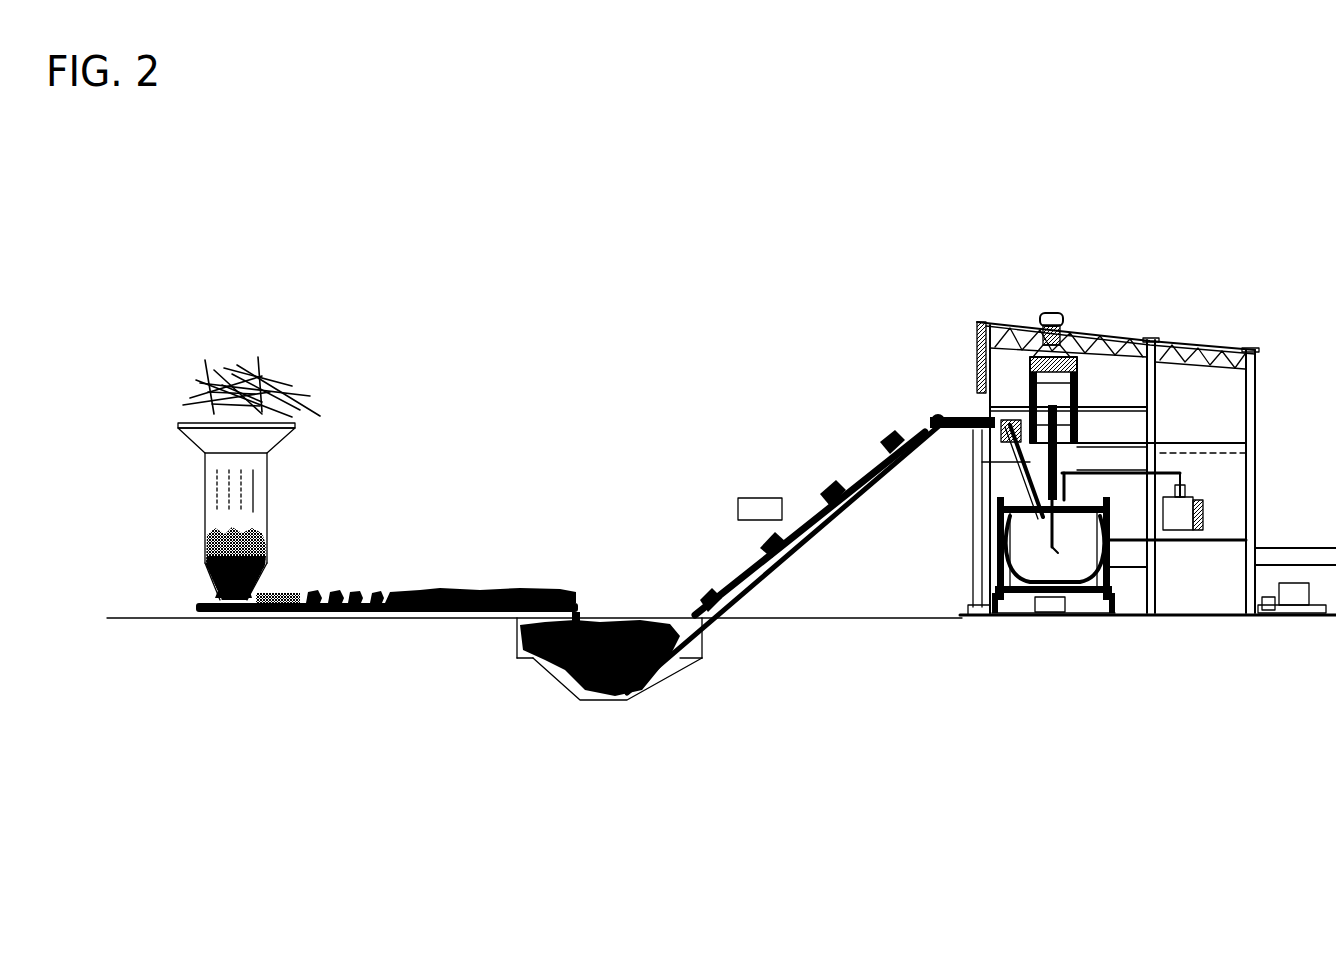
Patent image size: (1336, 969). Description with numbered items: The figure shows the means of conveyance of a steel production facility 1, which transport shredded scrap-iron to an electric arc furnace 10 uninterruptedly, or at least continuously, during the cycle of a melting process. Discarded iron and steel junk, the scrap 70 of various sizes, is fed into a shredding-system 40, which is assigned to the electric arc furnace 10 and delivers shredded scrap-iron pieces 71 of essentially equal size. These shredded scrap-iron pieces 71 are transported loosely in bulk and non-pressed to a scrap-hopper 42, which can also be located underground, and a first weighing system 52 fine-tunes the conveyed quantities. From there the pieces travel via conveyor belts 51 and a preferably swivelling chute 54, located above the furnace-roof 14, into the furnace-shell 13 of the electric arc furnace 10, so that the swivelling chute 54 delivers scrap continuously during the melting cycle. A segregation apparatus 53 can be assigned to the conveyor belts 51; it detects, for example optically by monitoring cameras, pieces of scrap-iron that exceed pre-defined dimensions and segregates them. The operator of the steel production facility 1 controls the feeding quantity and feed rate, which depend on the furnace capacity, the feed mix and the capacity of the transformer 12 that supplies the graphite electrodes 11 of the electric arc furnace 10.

The steel production facility 1 is at (795, 262).
The electric arc furnace 10 is at (1050, 628).
The graphite electrodes 11 is at (1055, 560).
The transformer 12 is at (1197, 512).
The furnace-shell 13 is at (990, 572).
The furnace-roof 14 is at (1003, 518).
The shredding-system 40 is at (248, 490).
The scrap-hopper 42 is at (520, 669).
The conveyor belts 51 is at (805, 545).
The first weighing system 52 is at (311, 612).
The segregation apparatus 53 is at (738, 508).
The swivelling chute 54 is at (1008, 476).
The scrap 70 is at (243, 382).
The shredded scrap-iron pieces 71 is at (348, 585).